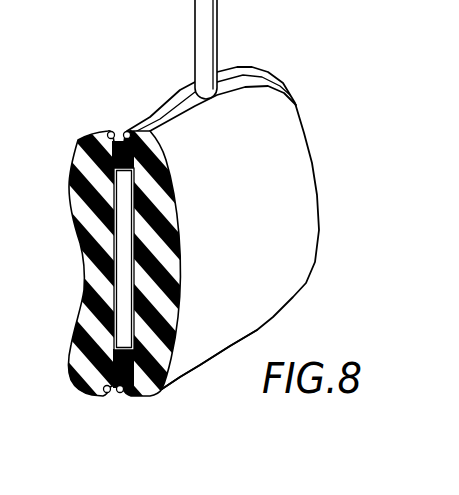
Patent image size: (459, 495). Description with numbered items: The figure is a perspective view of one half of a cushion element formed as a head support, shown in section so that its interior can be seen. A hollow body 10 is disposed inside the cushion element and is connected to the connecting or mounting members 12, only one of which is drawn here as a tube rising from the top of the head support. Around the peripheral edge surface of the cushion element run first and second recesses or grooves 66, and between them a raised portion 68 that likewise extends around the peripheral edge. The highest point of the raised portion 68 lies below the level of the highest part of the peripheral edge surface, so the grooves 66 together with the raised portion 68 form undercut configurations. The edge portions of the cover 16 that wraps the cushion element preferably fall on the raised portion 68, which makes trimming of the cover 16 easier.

The hollow body 10 is at (121, 218).
The connecting members 12 is at (205, 30).
The cover 16 is at (283, 188).
The grooves 66 is at (109, 131).
The raised portion 68 is at (118, 139).